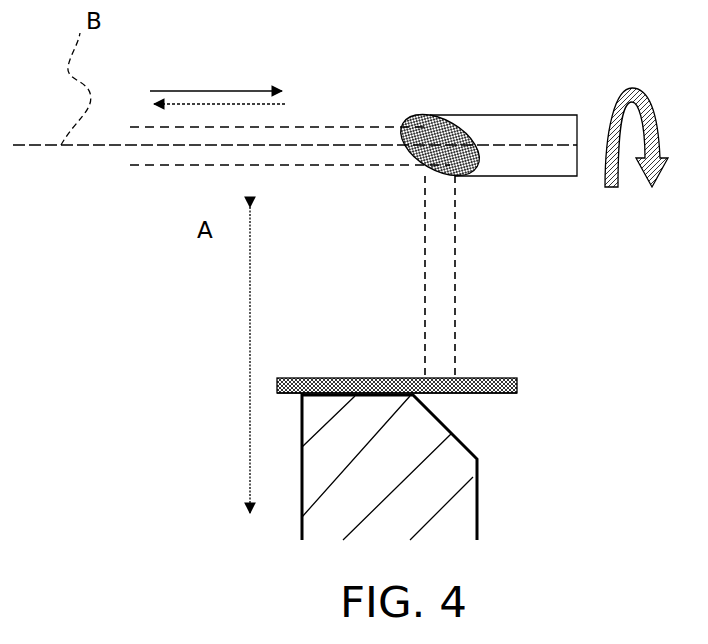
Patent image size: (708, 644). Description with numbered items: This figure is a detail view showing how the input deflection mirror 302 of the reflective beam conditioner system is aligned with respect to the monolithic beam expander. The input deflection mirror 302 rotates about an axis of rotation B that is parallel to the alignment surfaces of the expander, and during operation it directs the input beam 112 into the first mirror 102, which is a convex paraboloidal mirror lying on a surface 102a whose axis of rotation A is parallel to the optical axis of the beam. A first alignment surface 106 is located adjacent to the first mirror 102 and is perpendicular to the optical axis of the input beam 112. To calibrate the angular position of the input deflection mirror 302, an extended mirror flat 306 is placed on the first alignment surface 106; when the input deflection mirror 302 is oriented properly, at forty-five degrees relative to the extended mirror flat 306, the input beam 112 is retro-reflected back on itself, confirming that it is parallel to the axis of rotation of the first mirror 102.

The input deflection mirror 302 is at (489, 107).
The extended mirror flat 306 is at (498, 375).
The first mirror 102 is at (453, 427).
The surface 102a is at (334, 342).
The first alignment surface 106 is at (288, 378).
The input beam 112 is at (467, 299).